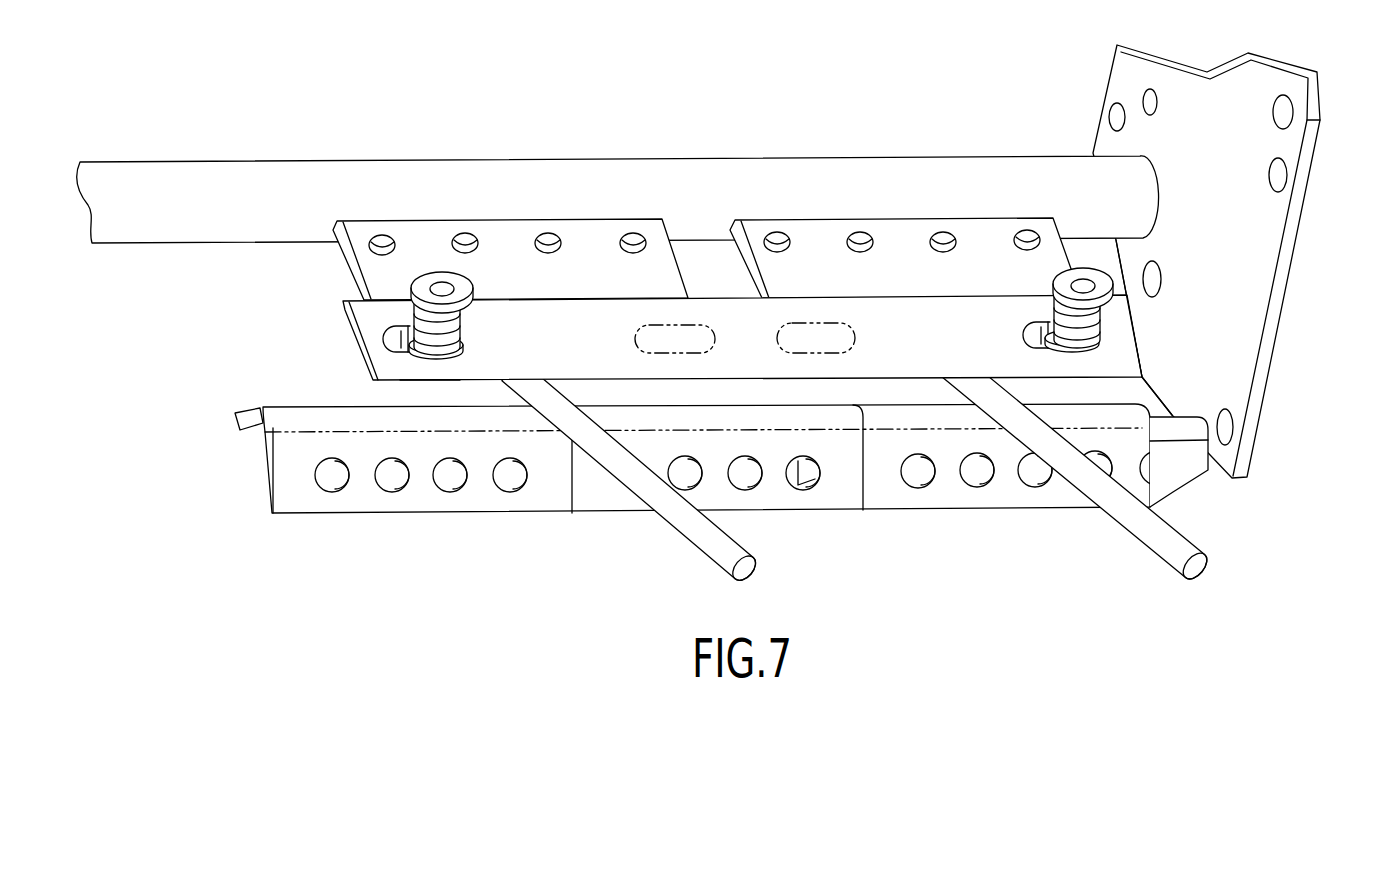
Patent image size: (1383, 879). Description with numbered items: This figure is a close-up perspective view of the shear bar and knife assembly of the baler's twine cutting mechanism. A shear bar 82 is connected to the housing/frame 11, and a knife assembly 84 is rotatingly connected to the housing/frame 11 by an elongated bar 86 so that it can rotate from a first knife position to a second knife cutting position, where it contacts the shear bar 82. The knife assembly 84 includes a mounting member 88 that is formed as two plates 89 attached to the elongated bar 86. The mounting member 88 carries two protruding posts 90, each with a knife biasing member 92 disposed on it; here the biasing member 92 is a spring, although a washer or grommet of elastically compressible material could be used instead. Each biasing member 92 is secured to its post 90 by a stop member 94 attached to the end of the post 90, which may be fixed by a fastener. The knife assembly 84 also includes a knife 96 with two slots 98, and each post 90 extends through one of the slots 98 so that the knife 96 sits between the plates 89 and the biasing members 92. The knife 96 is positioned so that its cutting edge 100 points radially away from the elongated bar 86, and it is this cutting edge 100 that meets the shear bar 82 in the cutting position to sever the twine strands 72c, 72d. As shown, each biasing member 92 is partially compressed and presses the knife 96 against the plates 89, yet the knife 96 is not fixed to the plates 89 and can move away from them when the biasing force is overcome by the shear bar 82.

The housing/frame 11 is at (1270, 234).
The twine strand 72c is at (723, 543).
The twine strand 72d is at (1173, 540).
The shear bar 82 is at (285, 507).
The knife assembly 84 is at (690, 315).
The elongated bar 86 is at (703, 168).
The mounting member 88 is at (707, 185).
The plate 89 is at (510, 228).
The protruding post 90 is at (388, 348).
The knife biasing member 92 is at (463, 322).
The stop member 94 is at (432, 273).
The knife 96 is at (741, 332).
The slot 98 is at (384, 332).
The cutting edge 100 is at (427, 382).